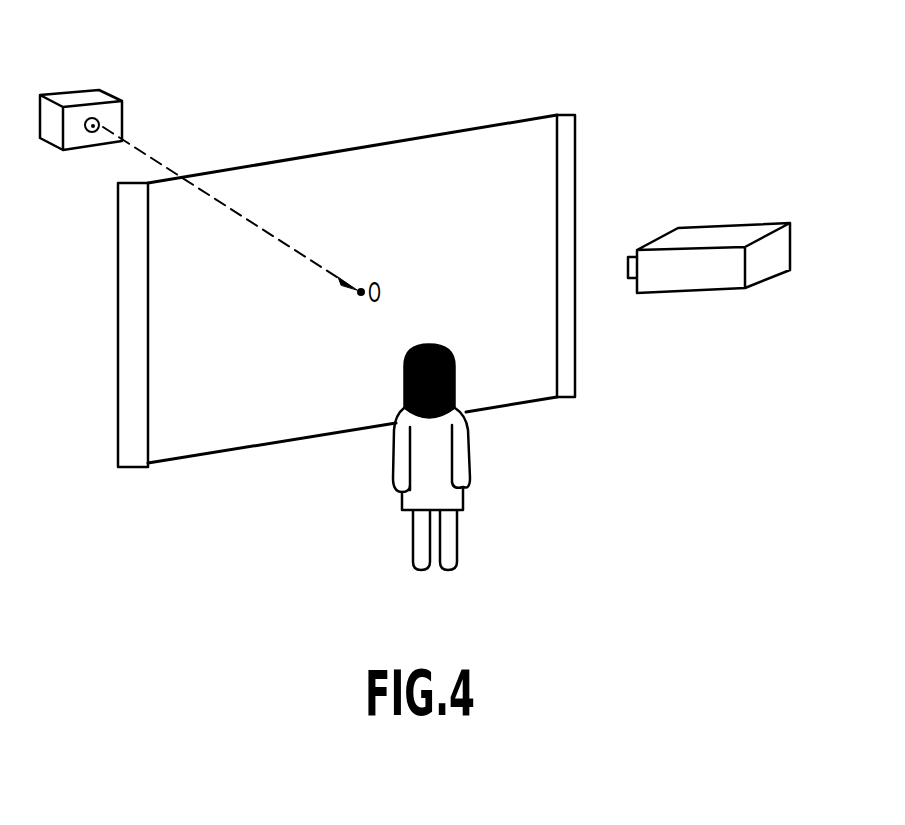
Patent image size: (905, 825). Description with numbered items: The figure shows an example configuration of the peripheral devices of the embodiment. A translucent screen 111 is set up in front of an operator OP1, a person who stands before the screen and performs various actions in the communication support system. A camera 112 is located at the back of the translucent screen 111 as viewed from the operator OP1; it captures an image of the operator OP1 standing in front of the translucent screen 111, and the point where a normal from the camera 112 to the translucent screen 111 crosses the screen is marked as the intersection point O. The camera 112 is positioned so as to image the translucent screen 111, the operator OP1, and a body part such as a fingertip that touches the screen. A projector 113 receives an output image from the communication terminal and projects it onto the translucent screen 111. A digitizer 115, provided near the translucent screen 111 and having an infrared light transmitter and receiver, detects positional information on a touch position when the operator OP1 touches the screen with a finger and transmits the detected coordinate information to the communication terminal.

The translucent screen 111 is at (405, 152).
The camera 112 is at (118, 93).
The projector 113 is at (757, 223).
The digitizer 115 is at (118, 200).
The operator OP1 is at (412, 540).